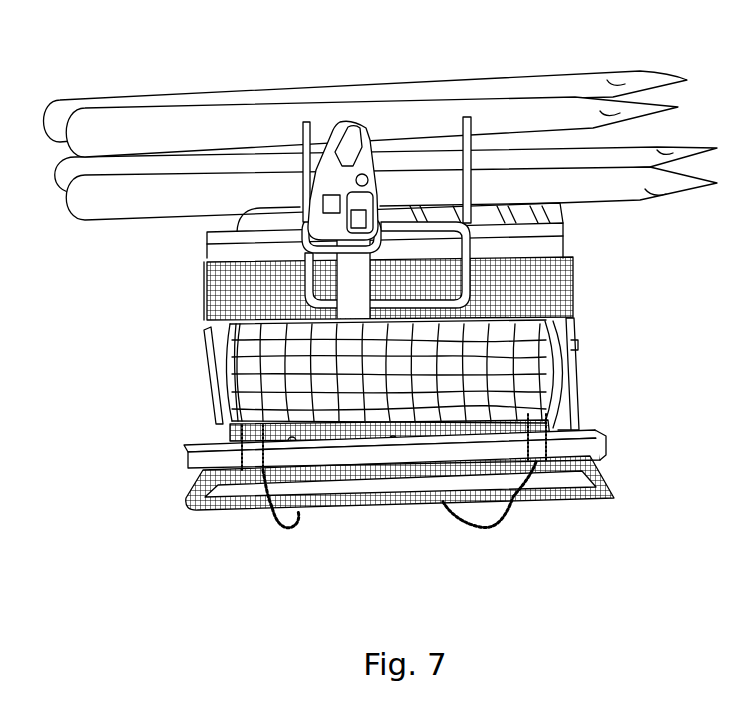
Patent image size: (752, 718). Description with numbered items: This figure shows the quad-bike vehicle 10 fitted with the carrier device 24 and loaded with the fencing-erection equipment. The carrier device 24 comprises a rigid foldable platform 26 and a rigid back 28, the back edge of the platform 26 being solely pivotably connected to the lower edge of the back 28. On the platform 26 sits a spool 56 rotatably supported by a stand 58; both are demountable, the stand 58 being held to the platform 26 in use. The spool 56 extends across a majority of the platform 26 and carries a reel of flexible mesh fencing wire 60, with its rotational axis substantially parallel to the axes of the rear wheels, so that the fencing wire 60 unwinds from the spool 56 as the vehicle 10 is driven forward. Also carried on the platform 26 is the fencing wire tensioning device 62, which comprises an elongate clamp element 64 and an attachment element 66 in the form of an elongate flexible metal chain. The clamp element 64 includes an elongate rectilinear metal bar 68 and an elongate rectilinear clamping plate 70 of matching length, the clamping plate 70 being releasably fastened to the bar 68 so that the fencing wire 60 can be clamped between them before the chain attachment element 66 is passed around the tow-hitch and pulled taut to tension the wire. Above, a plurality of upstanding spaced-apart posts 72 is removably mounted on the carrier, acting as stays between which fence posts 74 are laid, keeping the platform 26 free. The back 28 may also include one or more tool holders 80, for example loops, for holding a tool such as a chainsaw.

The quad-bike vehicle 10 is at (367, 295).
The carrier device 24 is at (575, 425).
The rigid foldable platform 26 is at (613, 494).
The rigid back 28 is at (207, 324).
The spool 56 is at (147, 375).
The stand 58 is at (203, 377).
The fencing wire 60 is at (533, 364).
The fencing wire tensioning device 62 is at (308, 457).
The elongate clamp element 64 is at (308, 457).
The attachment element 66 is at (443, 506).
The elongate rectilinear metal bar 68 is at (183, 458).
The elongate rectilinear clamping plate 70 is at (200, 443).
The posts 72 is at (467, 120).
The fence posts 74 is at (573, 83).
The tool holders 80 is at (300, 234).